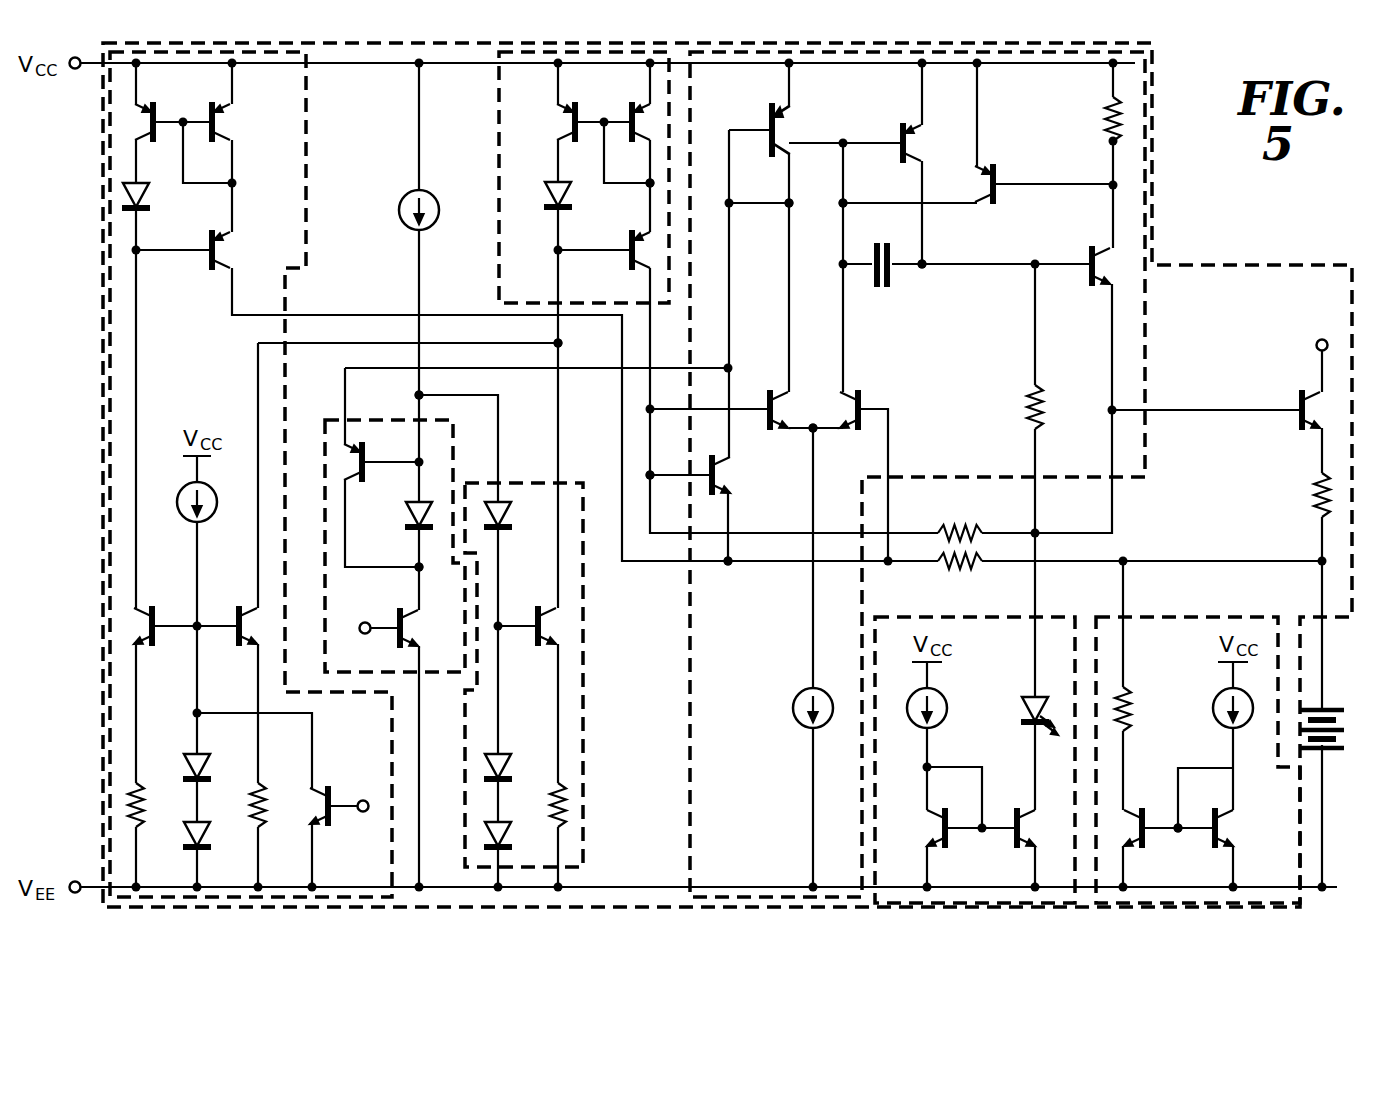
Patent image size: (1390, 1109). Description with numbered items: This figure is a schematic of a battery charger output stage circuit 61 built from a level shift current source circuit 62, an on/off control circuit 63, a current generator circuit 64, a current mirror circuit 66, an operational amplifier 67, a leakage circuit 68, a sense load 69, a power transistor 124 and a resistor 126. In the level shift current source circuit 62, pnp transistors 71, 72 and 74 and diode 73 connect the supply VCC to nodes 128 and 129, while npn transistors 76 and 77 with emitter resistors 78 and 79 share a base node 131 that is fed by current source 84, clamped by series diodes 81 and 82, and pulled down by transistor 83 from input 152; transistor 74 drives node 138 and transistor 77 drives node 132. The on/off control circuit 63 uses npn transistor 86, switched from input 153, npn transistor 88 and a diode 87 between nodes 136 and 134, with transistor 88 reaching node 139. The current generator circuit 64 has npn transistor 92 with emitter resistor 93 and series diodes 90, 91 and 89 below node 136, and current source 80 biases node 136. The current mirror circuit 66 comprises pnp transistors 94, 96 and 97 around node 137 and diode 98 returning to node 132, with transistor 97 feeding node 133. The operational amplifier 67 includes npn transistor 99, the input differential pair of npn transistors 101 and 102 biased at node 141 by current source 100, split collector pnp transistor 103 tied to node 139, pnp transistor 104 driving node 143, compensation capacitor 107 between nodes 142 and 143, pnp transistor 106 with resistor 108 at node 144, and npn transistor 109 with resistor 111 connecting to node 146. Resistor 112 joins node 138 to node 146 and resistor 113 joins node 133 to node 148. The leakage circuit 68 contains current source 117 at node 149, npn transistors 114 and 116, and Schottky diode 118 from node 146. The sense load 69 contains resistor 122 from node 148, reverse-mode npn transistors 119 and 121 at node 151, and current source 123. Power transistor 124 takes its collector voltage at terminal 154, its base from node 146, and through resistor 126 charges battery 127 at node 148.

The battery charger output stage circuit 61 is at (1294, 264).
The level shift current source circuit 62 is at (306, 146).
The on/off control circuit 63 is at (325, 420).
The current generator circuit 64 is at (583, 711).
The current mirror circuit 66 is at (499, 120).
The operational amplifier 67 is at (690, 817).
The leakage circuit 68 is at (1047, 615).
The sense load 69 is at (1196, 615).
The pnp transistor 71 is at (158, 113).
The pnp transistor 72 is at (232, 123).
The diode 73 is at (150, 202).
The pnp transistor 74 is at (233, 252).
The npn transistor 76 is at (158, 614).
The npn transistor 77 is at (232, 644).
The resistor 78 is at (142, 822).
The resistor 79 is at (268, 802).
The current source 80 is at (398, 204).
The diode 81 is at (182, 764).
The diode 82 is at (212, 842).
The transistor 83 is at (334, 794).
The current source 84 is at (206, 521).
The npn transistor 86 is at (412, 626).
The diode 87 is at (404, 520).
The npn transistor 88 is at (362, 480).
The diode 89 is at (508, 846).
The diode 90 is at (504, 530).
The diode 91 is at (504, 754).
The npn transistor 92 is at (536, 648).
The resistor 93 is at (554, 792).
The pnp transistor 94 is at (622, 110).
The pnp transistor 96 is at (554, 134).
The pnp transistor 97 is at (624, 268).
The diode 98 is at (542, 221).
The npn transistor 99 is at (730, 482).
The current source 100 is at (794, 720).
The npn transistor 101 is at (766, 426).
The npn transistor 102 is at (864, 398).
The pnp transistor 103 is at (766, 116).
The pnp transistor 104 is at (898, 128).
The pnp transistor 106 is at (998, 168).
The capacitor 107 is at (880, 292).
The resistor 108 is at (1102, 122).
The npn transistor 109 is at (1082, 254).
The resistor 111 is at (1024, 412).
The resistor 112 is at (962, 526).
The resistor 113 is at (946, 570).
The npn transistor 114 is at (928, 828).
The npn transistor 116 is at (1006, 844).
The current source 117 is at (942, 706).
The Schottky diode 118 is at (1018, 718).
The npn transistor 119 is at (1148, 846).
The npn transistor 121 is at (1236, 826).
The resistor 122 is at (1132, 704).
The current source 123 is at (1215, 726).
The power transistor 124 is at (1296, 428).
The resistor 126 is at (1310, 500).
The battery 127 is at (1332, 708).
The node 128 is at (238, 184).
The node 129 is at (140, 256).
The node 131 is at (194, 714).
The node 132 is at (564, 343).
The node 133 is at (729, 563).
The node 134 is at (414, 570).
The node 136 is at (414, 395).
The node 137 is at (646, 186).
The node 138 is at (644, 474).
The node 139 is at (786, 210).
The node 141 is at (813, 422).
The node 142 is at (840, 202).
The node 143 is at (926, 262).
The node 144 is at (1108, 186).
The node 146 is at (1106, 410).
The node 148 is at (1127, 560).
The node 149 is at (932, 766).
The node 151 is at (1174, 824).
The input 152 is at (366, 812).
The input 153 is at (362, 636).
The terminal 154 is at (1318, 340).